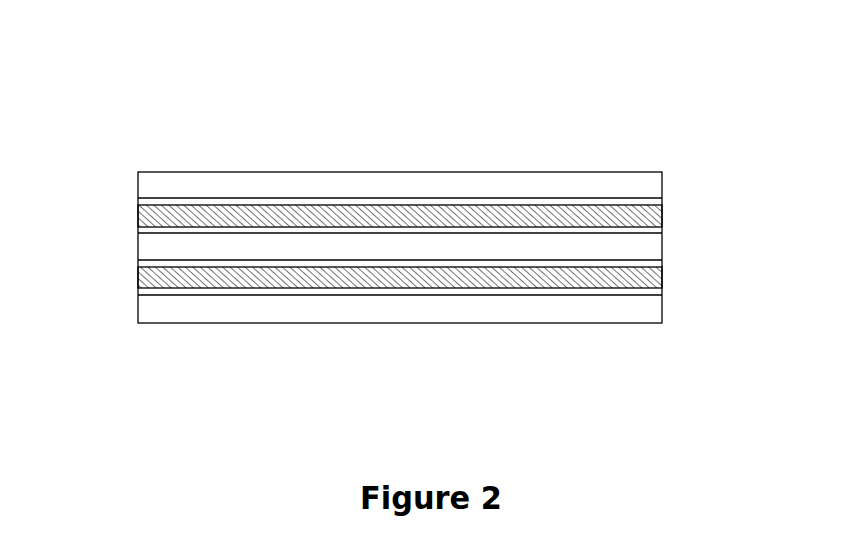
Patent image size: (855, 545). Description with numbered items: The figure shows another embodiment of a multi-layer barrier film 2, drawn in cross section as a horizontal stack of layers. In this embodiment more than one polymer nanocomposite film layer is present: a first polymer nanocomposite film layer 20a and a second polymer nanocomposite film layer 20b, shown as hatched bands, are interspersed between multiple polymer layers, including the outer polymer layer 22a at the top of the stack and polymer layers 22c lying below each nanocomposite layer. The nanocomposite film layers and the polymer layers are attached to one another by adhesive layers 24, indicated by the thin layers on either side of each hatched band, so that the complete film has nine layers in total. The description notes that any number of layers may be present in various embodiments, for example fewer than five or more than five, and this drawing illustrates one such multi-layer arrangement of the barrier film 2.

The multi-layer barrier film 2 is at (421, 136).
The polymer layer 22a is at (662, 183).
The polymer nanocomposite film layer 20a is at (674, 215).
The polymer layer 22c is at (662, 246).
The polymer nanocomposite film layer 20b is at (674, 277).
The adhesive layers 24 is at (138, 205).